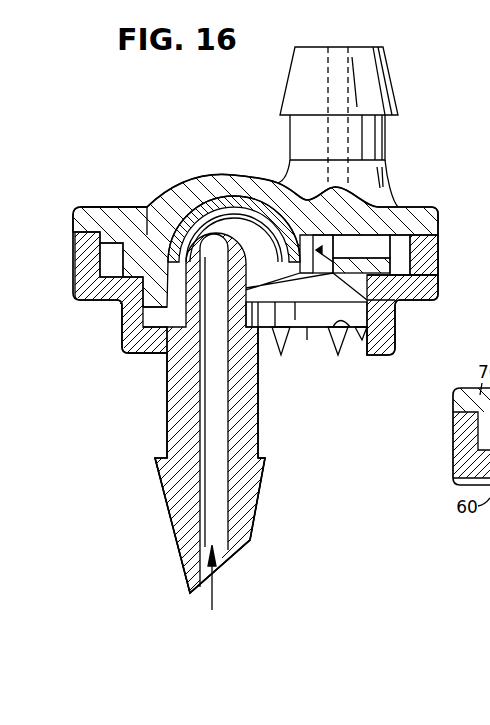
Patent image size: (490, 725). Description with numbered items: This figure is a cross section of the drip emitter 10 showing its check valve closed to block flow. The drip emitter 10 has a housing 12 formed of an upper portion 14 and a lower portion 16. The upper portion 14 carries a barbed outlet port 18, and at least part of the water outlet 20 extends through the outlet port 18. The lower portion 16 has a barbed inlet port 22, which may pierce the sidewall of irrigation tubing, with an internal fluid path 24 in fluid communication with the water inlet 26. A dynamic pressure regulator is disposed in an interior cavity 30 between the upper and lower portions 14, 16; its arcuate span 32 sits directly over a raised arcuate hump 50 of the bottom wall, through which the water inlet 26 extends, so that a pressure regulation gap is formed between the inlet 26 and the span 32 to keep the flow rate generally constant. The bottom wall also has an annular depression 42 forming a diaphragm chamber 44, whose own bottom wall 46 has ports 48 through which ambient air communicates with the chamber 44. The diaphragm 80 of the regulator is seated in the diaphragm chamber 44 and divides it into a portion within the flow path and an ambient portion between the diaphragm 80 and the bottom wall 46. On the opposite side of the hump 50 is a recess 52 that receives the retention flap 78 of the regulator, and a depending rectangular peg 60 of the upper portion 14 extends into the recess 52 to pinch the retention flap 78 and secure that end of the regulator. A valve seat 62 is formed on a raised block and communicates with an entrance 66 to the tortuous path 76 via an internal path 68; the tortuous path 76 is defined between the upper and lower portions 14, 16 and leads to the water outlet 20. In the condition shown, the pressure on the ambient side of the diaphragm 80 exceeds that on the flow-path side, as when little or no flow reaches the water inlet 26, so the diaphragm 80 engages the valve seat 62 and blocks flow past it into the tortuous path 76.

The drip emitter 10 is at (98, 138).
The housing 12 is at (73, 246).
The upper portion 14 is at (74, 209).
The lower portion 16 is at (98, 302).
The barbed outlet port 18 is at (402, 105).
The water outlet 20 is at (352, 82).
The barbed inlet port 22 is at (258, 510).
The internal fluid path 24 is at (256, 448).
The water inlet 26 is at (218, 237).
The interior cavity 30 is at (243, 205).
The arcuate span 32 is at (190, 218).
The annular depression 42 is at (360, 318).
The diaphragm chamber 44 is at (289, 350).
The bottom wall 46 is at (354, 348).
The ports 48 is at (341, 355).
The raised arcuate hump 50 is at (152, 237).
The recess 52 is at (143, 360).
The peg 60 is at (132, 356).
The valve seat 62 is at (393, 205).
The entrance 66 is at (415, 275).
The internal path 68 is at (320, 250).
The tortuous path 76 is at (108, 250).
The retention flap 78 is at (161, 484).
The diaphragm 80 is at (272, 360).